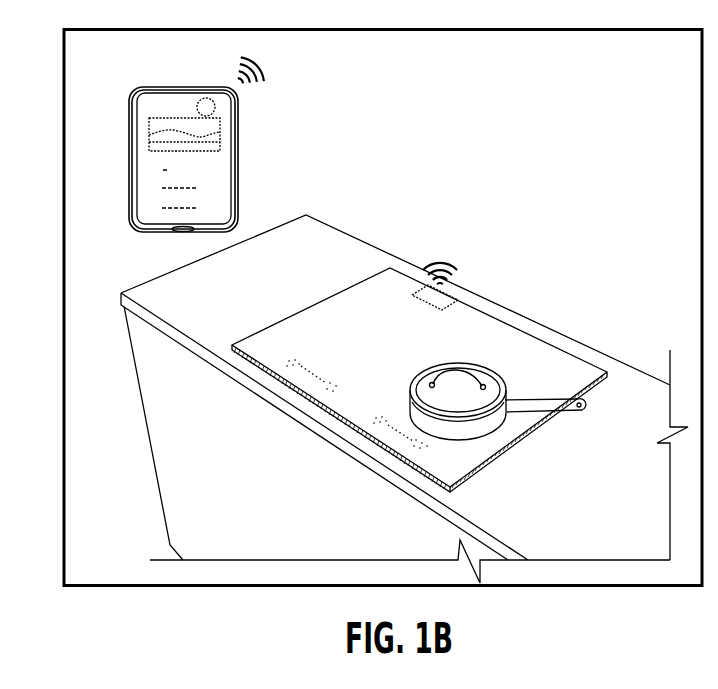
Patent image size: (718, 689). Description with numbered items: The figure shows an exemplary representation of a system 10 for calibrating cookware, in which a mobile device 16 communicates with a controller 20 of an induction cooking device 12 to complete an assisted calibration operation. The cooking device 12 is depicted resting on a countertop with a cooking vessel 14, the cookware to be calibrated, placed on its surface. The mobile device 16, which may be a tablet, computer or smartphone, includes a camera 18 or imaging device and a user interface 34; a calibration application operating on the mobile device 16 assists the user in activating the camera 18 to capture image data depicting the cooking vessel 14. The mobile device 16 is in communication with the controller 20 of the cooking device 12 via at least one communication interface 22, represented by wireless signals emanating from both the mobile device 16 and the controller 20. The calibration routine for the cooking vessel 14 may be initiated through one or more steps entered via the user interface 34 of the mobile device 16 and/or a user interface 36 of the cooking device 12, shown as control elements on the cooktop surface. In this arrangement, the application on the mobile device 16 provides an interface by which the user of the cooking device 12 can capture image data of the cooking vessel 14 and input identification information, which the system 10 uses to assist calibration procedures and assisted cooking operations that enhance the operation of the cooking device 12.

The system 10 is at (532, 119).
The induction cooking device 12 is at (323, 317).
The cooking vessel 14 is at (500, 382).
The mobile device 16 is at (140, 95).
The camera 18 is at (200, 97).
The controller 20 is at (457, 302).
The communication interface 22 is at (281, 87).
The user interface 34 is at (217, 164).
The user interface 36 is at (387, 430).